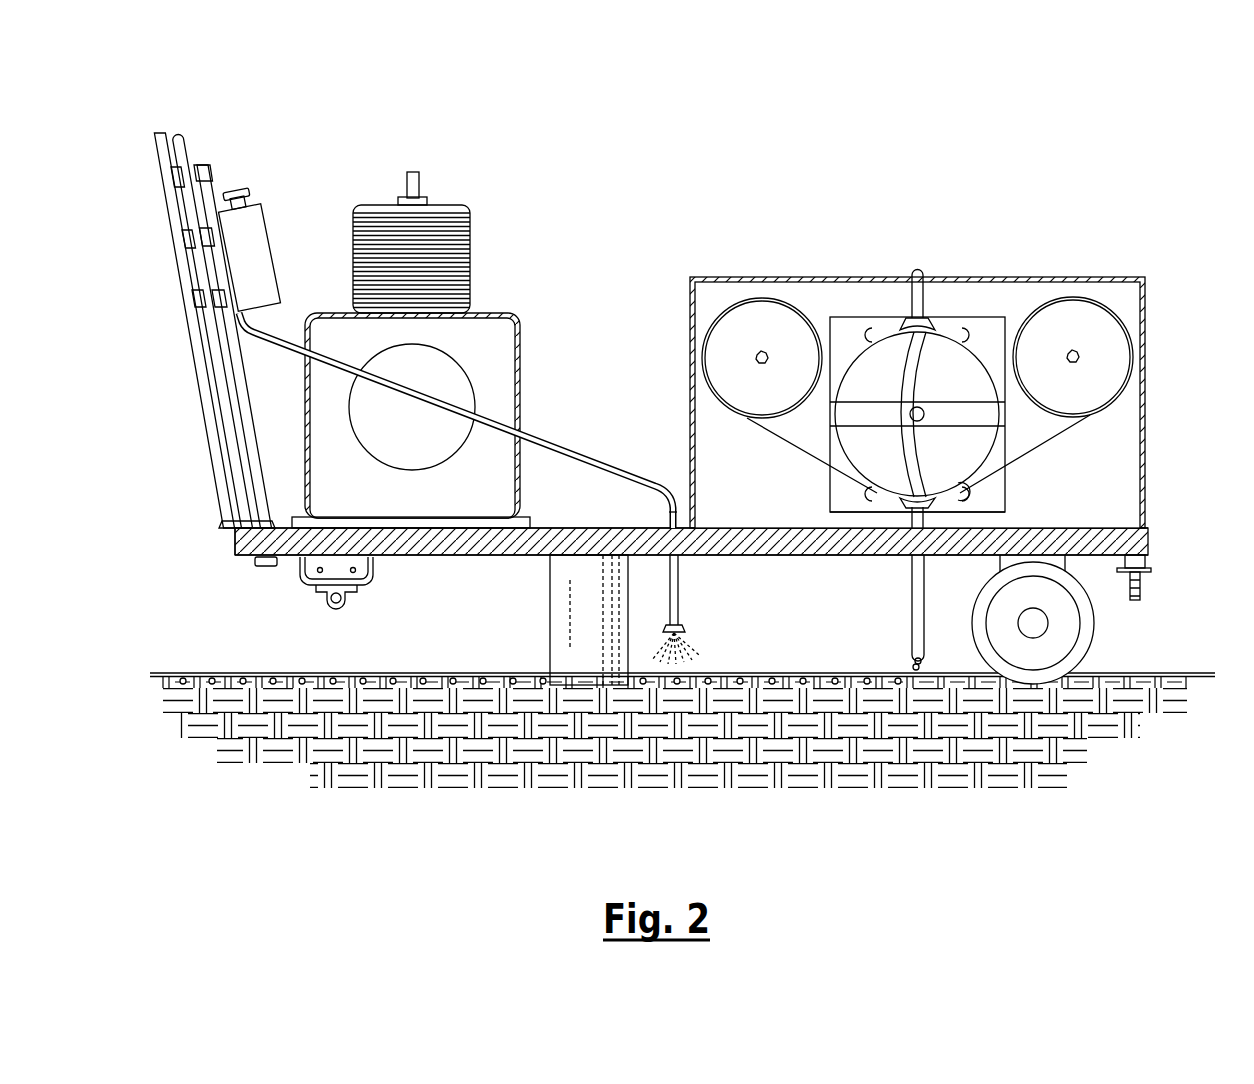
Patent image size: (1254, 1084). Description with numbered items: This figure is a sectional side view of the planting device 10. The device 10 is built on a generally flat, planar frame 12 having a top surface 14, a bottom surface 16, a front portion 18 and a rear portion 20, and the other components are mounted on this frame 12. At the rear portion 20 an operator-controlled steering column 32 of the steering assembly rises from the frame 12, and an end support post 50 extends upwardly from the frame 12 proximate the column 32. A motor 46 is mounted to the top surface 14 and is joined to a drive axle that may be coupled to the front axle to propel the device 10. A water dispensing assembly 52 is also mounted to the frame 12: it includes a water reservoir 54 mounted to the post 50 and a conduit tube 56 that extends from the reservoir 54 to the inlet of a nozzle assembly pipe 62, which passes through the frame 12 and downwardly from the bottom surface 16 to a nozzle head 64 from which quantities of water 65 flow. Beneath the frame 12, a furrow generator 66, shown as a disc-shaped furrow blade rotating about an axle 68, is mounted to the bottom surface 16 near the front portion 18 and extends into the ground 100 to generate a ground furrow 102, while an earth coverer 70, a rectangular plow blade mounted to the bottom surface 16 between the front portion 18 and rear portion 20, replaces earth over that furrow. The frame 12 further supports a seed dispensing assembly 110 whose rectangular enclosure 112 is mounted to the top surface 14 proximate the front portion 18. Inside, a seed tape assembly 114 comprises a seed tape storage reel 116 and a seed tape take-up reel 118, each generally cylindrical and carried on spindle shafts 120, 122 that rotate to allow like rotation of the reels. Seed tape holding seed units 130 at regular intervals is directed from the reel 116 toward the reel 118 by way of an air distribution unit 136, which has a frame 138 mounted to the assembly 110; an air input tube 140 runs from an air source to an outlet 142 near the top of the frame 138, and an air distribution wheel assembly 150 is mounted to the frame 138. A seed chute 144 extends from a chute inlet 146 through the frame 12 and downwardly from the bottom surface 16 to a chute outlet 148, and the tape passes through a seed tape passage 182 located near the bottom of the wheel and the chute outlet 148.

The planting device 10 is at (668, 367).
The frame 12 is at (428, 556).
The top surface 14 is at (563, 527).
The bottom surface 16 is at (456, 556).
The front portion 18 is at (1150, 539).
The rear portion 20 is at (235, 543).
The steering column 32 is at (240, 402).
The motor 46 is at (450, 178).
The end support post 50 is at (198, 345).
The water dispensing assembly 52 is at (411, 319).
The water reservoir 54 is at (252, 258).
The conduit tube 56 is at (524, 432).
The nozzle assembly pipe 62 is at (669, 568).
The nozzle head 64 is at (683, 624).
The water 65 is at (690, 648).
The furrow generator 66 is at (1079, 619).
The axle 68 is at (1040, 620).
The earth coverer 70 is at (541, 602).
The ground 100 is at (682, 696).
The ground furrow 102 is at (788, 683).
The seed dispensing assembly 110 is at (919, 352).
The rectangular enclosure 112 is at (731, 277).
The seed tape assembly 114 is at (1077, 458).
The seed tape storage reel 116 is at (1117, 338).
The seed tape take-up reel 118 is at (720, 340).
The spindle shaft 120 is at (1080, 358).
The spindle shaft 122 is at (755, 359).
The seed units 130 is at (333, 678).
The air distribution unit 136 is at (819, 481).
The frame 138 is at (1008, 511).
The air input tube 140 is at (921, 300).
The outlet 142 is at (931, 325).
The seed chute 144 is at (926, 578).
The chute inlet 146 is at (903, 498).
The chute outlet 148 is at (924, 660).
The air distribution wheel assembly 150 is at (850, 348).
The seed tape passage 182 is at (955, 491).